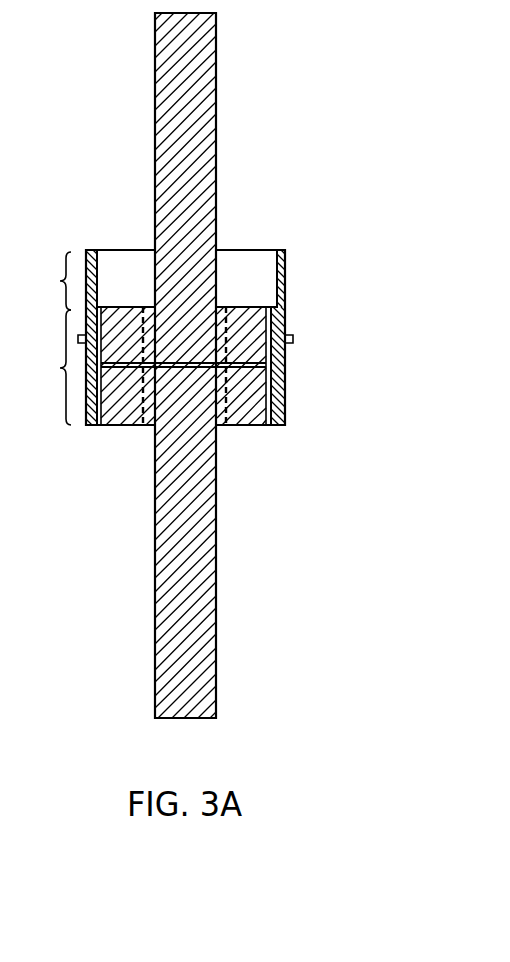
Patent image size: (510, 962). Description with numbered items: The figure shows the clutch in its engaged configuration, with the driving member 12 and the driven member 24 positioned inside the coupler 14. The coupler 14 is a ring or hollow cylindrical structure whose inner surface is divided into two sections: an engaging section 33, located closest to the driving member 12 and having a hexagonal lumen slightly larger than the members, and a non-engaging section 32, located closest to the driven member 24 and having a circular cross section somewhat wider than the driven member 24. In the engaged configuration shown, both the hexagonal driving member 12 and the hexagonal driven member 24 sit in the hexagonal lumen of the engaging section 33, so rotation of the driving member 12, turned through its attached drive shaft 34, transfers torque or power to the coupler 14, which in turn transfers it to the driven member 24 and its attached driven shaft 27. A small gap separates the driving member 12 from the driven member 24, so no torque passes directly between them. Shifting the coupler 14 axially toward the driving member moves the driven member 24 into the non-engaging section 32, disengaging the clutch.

The driven shaft 27 is at (232, 62).
The drive shaft 34 is at (231, 537).
The coupler 14 is at (287, 261).
The driven member 24 is at (264, 314).
The driving member 12 is at (284, 400).
The non-engaging section 32 is at (49, 281).
The engaging section 33 is at (49, 367).